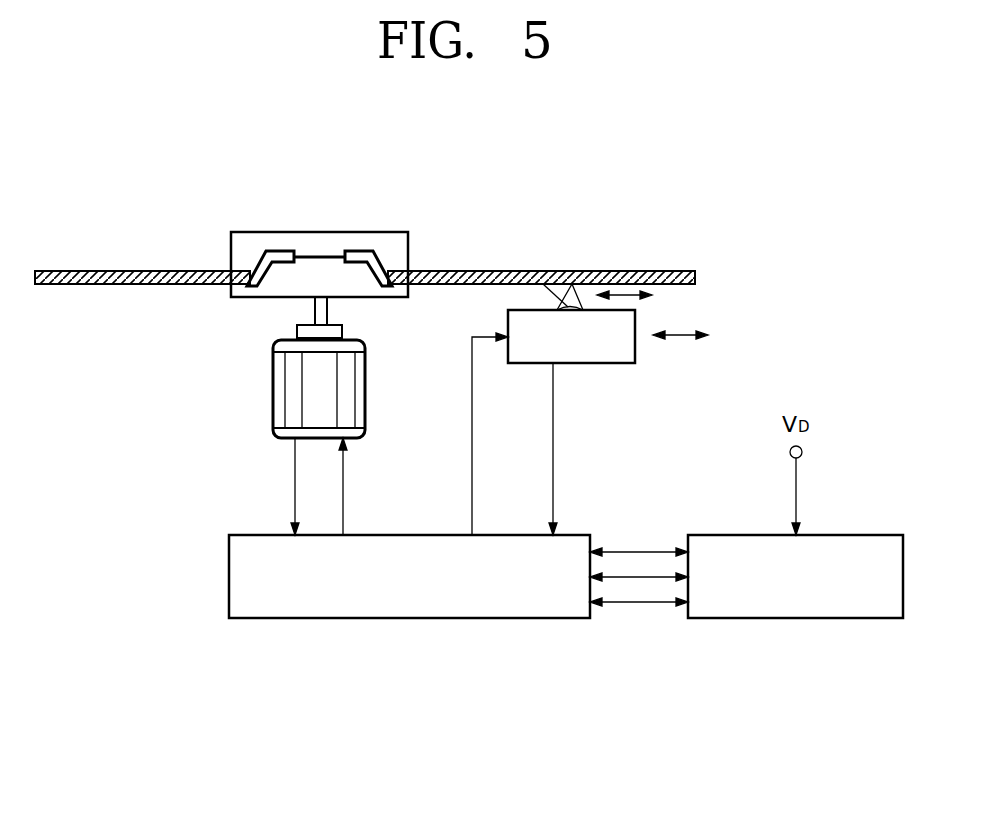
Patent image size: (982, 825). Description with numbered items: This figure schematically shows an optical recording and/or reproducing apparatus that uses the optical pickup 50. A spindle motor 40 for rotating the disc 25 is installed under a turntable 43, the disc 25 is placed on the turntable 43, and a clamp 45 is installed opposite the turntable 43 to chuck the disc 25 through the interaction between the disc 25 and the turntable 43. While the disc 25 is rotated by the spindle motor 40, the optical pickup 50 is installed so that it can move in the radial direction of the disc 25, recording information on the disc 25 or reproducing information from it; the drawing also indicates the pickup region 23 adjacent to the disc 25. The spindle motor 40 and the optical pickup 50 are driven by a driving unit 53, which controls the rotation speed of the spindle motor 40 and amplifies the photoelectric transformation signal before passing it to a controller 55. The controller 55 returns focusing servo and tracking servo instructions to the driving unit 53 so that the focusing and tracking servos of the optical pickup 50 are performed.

The optical pickup 23 is at (548, 280).
The disc 25 is at (651, 271).
The spindle motor 40 is at (273, 385).
The turntable 43 is at (248, 286).
The clamp 45 is at (258, 246).
The optical pickup 50 is at (600, 363).
The driving unit 53 is at (410, 618).
The controller 55 is at (800, 618).